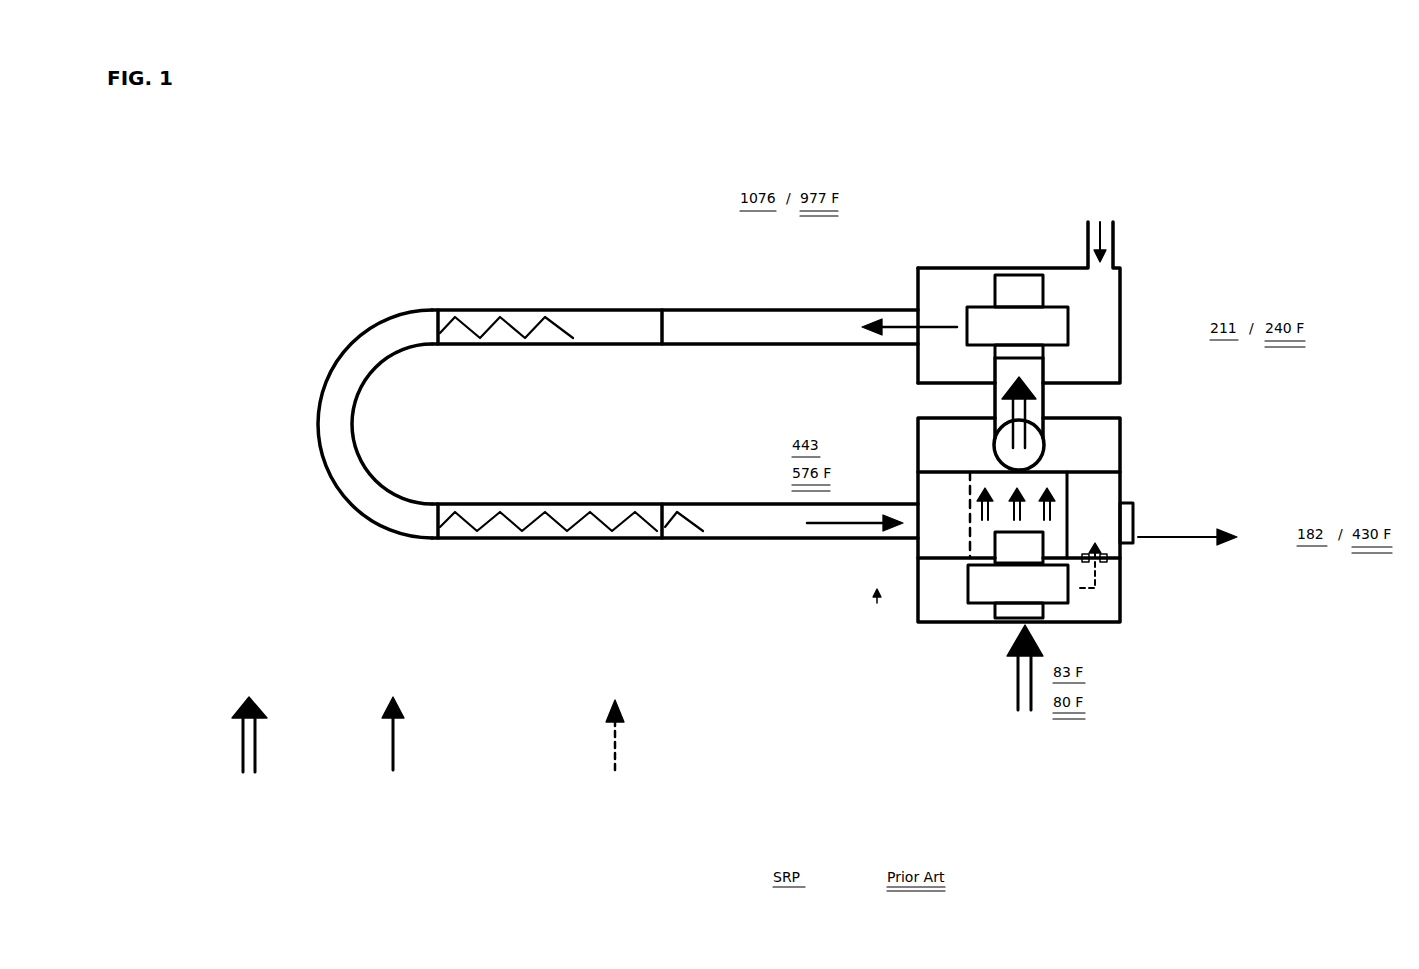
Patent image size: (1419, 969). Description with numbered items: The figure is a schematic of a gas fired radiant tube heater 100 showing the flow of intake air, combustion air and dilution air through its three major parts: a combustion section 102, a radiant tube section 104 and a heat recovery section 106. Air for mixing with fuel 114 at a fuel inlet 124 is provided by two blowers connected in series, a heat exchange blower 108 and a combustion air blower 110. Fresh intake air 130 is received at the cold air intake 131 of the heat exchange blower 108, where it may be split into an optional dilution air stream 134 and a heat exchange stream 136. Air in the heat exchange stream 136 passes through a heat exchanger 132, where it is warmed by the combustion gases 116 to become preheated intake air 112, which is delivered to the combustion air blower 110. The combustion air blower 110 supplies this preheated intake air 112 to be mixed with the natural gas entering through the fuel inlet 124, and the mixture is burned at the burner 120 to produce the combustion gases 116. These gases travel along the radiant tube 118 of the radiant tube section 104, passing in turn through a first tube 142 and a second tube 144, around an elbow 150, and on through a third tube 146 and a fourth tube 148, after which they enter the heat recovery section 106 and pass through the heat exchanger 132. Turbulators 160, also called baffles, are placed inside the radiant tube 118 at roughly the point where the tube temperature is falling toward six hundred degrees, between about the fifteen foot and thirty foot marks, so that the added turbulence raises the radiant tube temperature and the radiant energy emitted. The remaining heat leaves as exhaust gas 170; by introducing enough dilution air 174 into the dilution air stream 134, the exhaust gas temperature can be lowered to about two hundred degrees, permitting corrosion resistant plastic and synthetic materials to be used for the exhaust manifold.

The gas fired radiant tube heater 100 is at (1172, 124).
The combustion section 102 is at (1110, 362).
The radiant tube section 104 is at (228, 480).
The heat recovery section 106 is at (1105, 612).
The heat exchange blower 108 is at (1057, 587).
The combustion air blower 110 is at (1010, 367).
The preheated intake air 112 is at (1017, 413).
The fuel 114 is at (1113, 248).
The combustion gases 116 is at (888, 308).
The radiant tube 118 is at (697, 323).
The burner 120 is at (1055, 328).
The fuel inlet 124 is at (1088, 242).
The fresh intake air 130 is at (1016, 693).
The cold air intake 131 is at (1050, 622).
The heat exchanger 132 is at (1100, 483).
The dilution air stream 134 is at (1095, 575).
The heat exchange stream 136 is at (1047, 510).
The first tube 142 is at (730, 310).
The second tube 144 is at (445, 307).
The third tube 146 is at (465, 530).
The fourth tube 148 is at (697, 540).
The elbow 150 is at (352, 367).
The turbulators 160 is at (500, 320).
The exhaust gas 170 is at (1197, 537).
The dilution air 174 is at (615, 772).